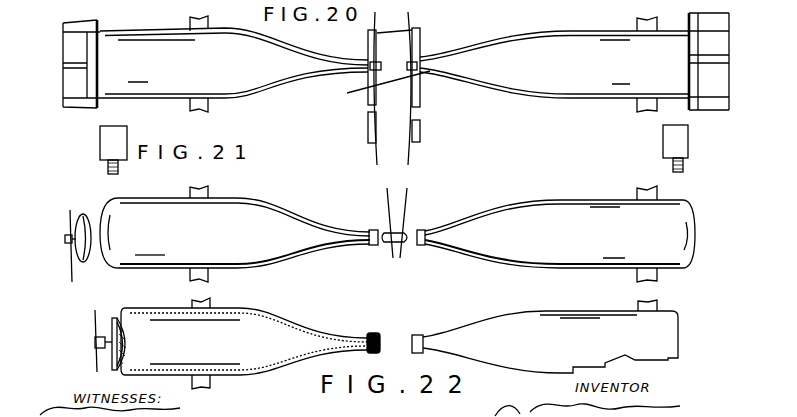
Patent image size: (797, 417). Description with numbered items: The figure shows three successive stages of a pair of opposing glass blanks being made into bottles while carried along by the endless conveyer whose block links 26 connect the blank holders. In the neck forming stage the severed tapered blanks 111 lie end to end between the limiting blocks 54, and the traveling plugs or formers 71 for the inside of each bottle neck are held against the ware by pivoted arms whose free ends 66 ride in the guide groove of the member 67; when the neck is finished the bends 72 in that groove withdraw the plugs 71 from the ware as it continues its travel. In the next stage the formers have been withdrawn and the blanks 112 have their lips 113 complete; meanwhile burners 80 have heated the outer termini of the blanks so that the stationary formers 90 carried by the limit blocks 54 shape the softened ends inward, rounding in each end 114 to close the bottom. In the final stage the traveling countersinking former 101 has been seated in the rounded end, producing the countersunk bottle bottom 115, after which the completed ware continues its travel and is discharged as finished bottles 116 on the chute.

In FIG. 20, the block links 26 is at (313, 93).
In FIG. 21, the block links 26 is at (210, 192).
In FIG. 22, the block links 26 is at (399, 343).
In FIG. 20, the limiting blocks 54 is at (62, 55).
In FIG. 20, the free end of arm 66 is at (417, 62).
In FIG. 20, the member 67 is at (420, 32).
In FIG. 21, the traveling plug or former 71 is at (370, 263).
In FIG. 20, the bends 72 is at (412, 142).
In FIG. 21, the burners 80 is at (108, 171).
In FIG. 21, the stationary formers 90 is at (100, 152).
In FIG. 21, the traveling formers 101 is at (68, 221).
In FIG. 22, the traveling formers 101 is at (95, 322).
In FIG. 20, the blanks 111 is at (376, 86).
In FIG. 21, the blanks 112 is at (545, 201).
In FIG. 21, the lips 113 is at (373, 245).
In FIG. 21, the rounded-in end 114 is at (102, 255).
In FIG. 22, the countersunk bottle bottom 115 is at (117, 357).
In FIG. 22, the finished bottles 116 is at (470, 320).